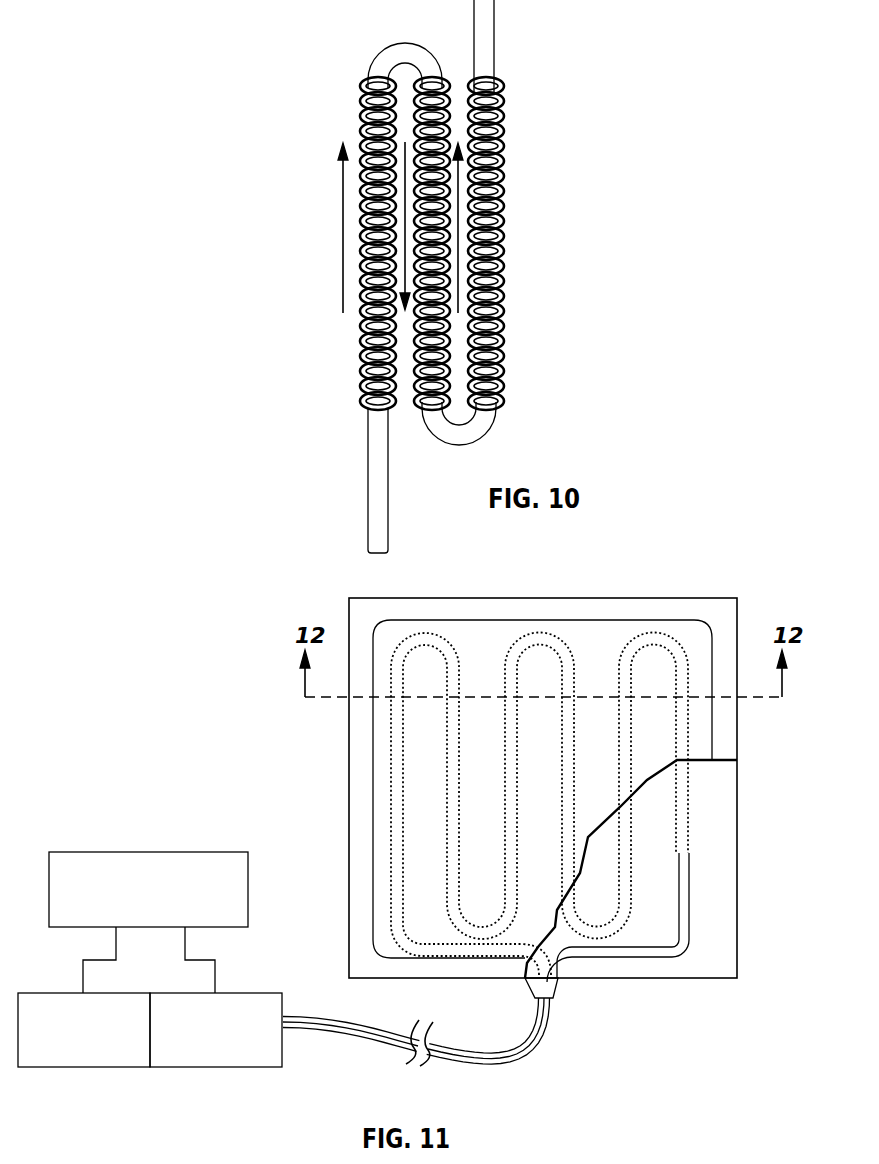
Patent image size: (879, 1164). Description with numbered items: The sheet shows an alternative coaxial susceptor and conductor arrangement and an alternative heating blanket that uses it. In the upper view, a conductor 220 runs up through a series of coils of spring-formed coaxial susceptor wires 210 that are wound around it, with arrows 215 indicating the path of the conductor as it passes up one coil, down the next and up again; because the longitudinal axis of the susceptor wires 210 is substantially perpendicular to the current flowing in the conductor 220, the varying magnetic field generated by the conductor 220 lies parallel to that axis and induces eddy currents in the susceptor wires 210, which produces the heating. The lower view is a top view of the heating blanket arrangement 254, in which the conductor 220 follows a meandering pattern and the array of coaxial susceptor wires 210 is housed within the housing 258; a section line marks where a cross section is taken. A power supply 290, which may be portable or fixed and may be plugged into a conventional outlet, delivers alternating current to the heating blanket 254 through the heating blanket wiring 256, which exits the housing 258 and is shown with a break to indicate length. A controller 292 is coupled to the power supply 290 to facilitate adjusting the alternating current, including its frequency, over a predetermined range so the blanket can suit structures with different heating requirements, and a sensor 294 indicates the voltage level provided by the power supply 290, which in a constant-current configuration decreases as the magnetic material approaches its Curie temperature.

In FIG. 10, the coaxial susceptor wires 210 is at (500, 355).
In FIG. 11, the coaxial susceptor wires 210 is at (692, 838).
In FIG. 10, the air flow direction 215 is at (342, 246).
In FIG. 10, the conductor 220 is at (485, 60).
In FIG. 11, the conductor 220 is at (690, 895).
In FIG. 11, the heating blanket arrangement 254 is at (692, 543).
In FIG. 11, the heating blanket wiring 256 is at (528, 1060).
In FIG. 11, the housing 258 is at (739, 623).
In FIG. 11, the power supply 290 is at (212, 1068).
In FIG. 11, the controller 292 is at (152, 852).
In FIG. 11, the sensor 294 is at (80, 1068).